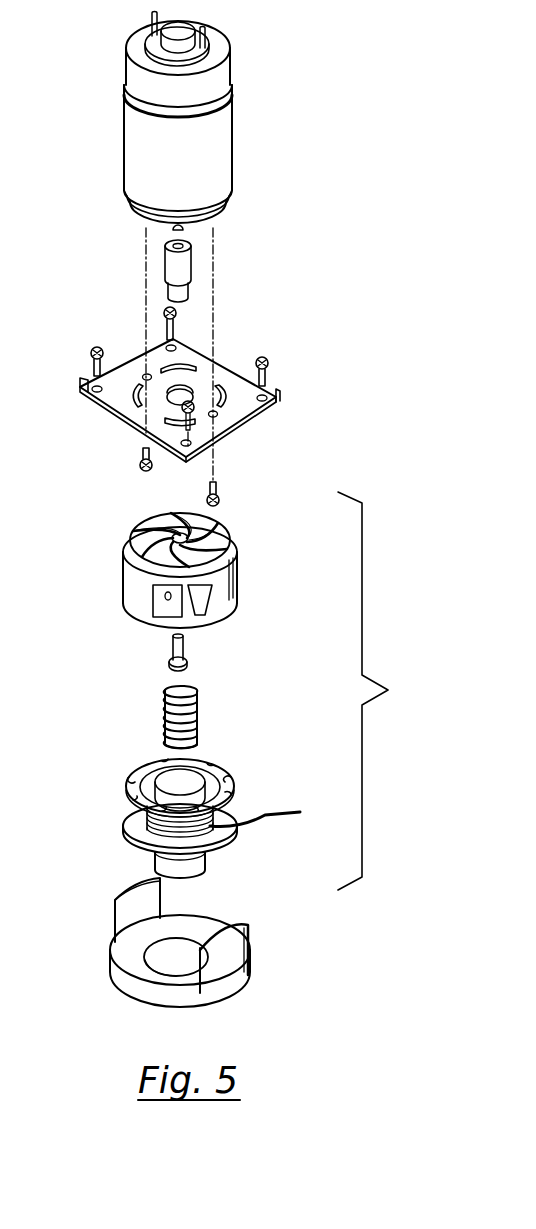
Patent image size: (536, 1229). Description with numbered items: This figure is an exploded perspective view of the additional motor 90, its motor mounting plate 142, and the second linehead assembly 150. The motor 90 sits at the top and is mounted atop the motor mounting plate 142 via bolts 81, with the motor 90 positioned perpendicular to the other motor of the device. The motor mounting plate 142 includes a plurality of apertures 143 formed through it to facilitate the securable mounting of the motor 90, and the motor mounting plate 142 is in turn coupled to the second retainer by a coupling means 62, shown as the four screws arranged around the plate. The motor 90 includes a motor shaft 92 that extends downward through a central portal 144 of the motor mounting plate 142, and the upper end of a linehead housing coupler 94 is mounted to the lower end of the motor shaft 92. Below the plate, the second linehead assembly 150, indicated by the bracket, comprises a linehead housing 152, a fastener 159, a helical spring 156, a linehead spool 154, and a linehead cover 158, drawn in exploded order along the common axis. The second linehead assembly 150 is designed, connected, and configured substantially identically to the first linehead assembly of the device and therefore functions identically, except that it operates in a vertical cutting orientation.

The motor 90 is at (233, 118).
The motor shaft 92 is at (184, 232).
The linehead housing coupler 94 is at (192, 272).
The coupling means 62 is at (266, 358).
The motor mounting plate 142 is at (78, 398).
The apertures 143 is at (272, 400).
The central portal 144 is at (176, 400).
The bolts 81 is at (219, 488).
The linehead housing 152 is at (238, 560).
The fastener 159 is at (172, 648).
The helical spring 156 is at (198, 720).
The linehead spool 154 is at (232, 782).
The linehead cover 158 is at (118, 955).
The second linehead assembly 150 is at (383, 691).